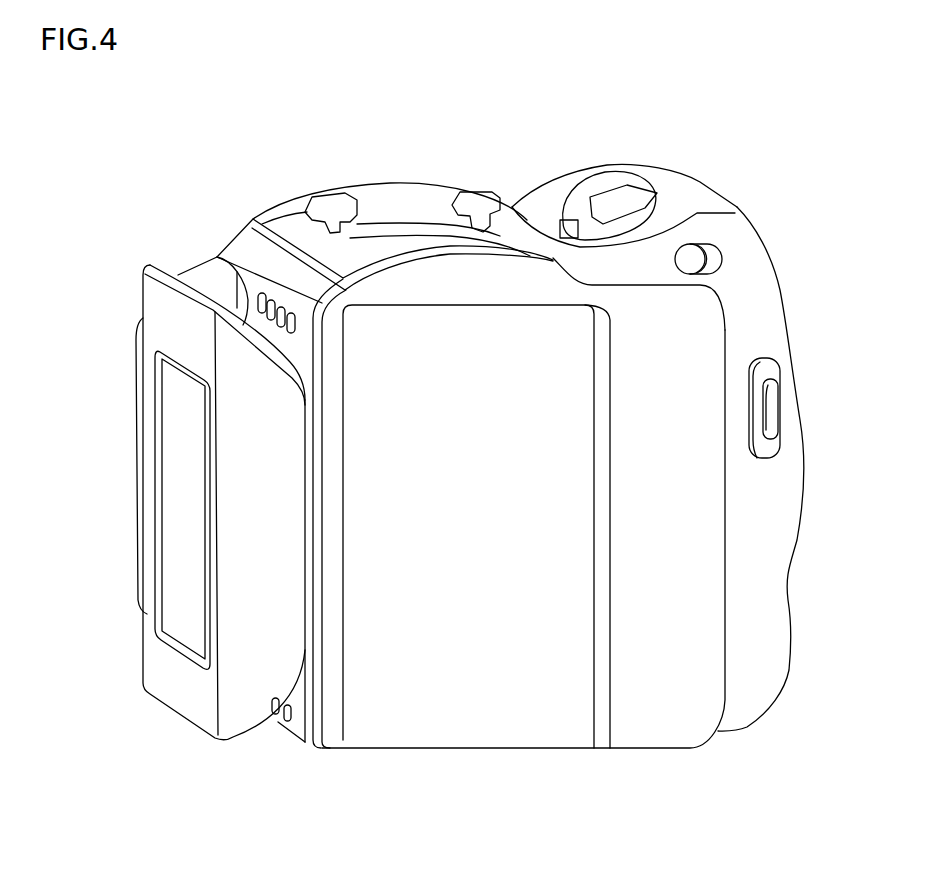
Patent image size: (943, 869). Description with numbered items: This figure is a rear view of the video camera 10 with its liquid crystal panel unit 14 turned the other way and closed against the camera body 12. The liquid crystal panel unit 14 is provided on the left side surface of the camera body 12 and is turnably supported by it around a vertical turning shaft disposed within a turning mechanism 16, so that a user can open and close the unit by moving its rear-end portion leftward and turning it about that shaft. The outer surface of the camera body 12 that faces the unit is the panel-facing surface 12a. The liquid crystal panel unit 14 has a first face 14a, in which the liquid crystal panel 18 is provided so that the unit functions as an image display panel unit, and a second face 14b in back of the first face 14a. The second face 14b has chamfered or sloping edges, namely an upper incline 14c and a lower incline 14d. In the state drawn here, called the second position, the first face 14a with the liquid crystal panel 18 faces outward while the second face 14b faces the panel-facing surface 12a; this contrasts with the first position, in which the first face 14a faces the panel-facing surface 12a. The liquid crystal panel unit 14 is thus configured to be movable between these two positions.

The video camera 10 is at (736, 171).
The camera body 12 is at (778, 283).
The panel-facing surface 12a is at (300, 730).
The liquid crystal panel unit 14 is at (197, 737).
The first face 14a is at (174, 697).
The second face 14b is at (306, 612).
The upper incline 14c is at (246, 322).
The lower incline 14d is at (262, 724).
The turning mechanism 16 is at (132, 471).
The liquid crystal panel 18 is at (178, 620).